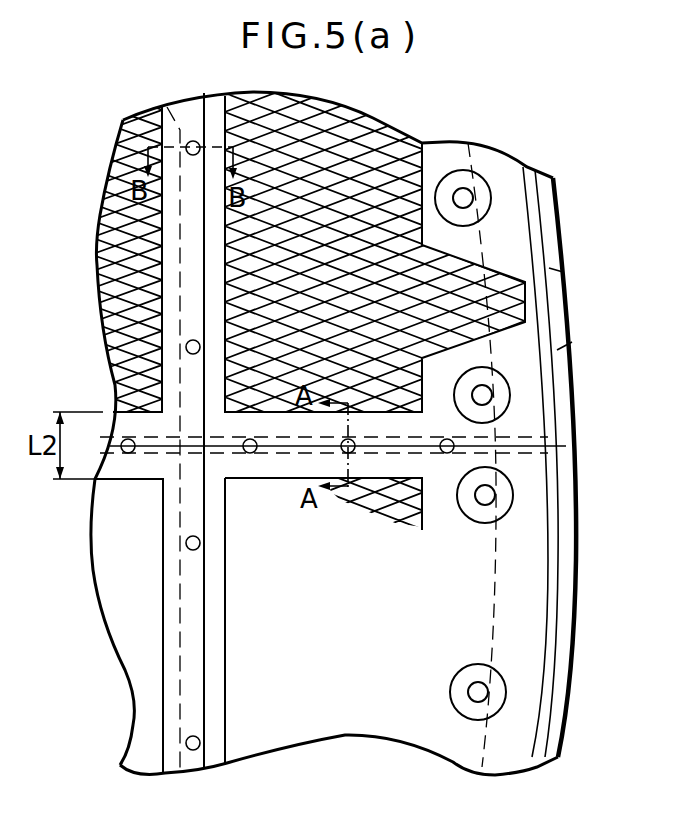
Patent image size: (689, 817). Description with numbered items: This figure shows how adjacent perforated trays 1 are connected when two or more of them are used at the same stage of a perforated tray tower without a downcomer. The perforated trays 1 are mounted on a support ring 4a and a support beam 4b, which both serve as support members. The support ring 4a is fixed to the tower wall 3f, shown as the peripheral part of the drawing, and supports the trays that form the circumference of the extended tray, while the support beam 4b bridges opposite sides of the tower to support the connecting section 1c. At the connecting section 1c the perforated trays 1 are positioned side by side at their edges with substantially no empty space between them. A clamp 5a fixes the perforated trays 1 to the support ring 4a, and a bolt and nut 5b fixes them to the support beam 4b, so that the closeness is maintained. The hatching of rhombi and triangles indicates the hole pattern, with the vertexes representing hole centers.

The perforated tray 1 is at (534, 206).
The connecting section 1c is at (574, 455).
The tower wall 3f is at (570, 345).
The support ring 4a is at (563, 271).
The support beam 4b is at (167, 107).
The clamp 5a is at (513, 495).
The bolt and nut 5b is at (199, 548).